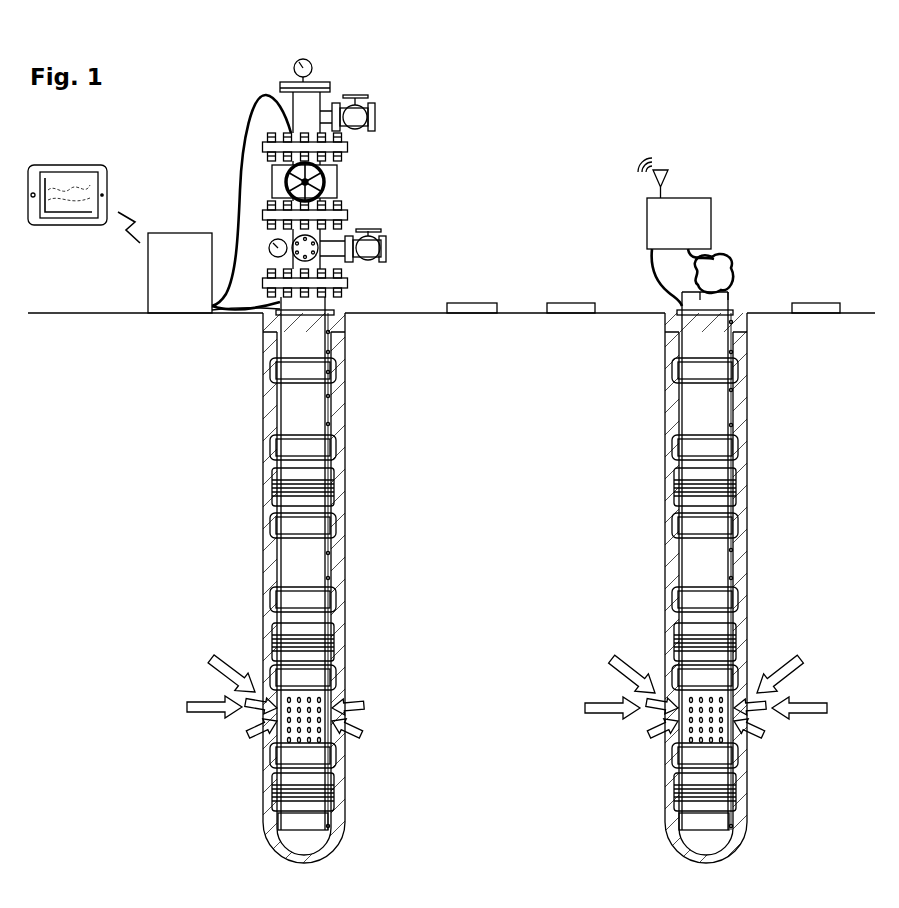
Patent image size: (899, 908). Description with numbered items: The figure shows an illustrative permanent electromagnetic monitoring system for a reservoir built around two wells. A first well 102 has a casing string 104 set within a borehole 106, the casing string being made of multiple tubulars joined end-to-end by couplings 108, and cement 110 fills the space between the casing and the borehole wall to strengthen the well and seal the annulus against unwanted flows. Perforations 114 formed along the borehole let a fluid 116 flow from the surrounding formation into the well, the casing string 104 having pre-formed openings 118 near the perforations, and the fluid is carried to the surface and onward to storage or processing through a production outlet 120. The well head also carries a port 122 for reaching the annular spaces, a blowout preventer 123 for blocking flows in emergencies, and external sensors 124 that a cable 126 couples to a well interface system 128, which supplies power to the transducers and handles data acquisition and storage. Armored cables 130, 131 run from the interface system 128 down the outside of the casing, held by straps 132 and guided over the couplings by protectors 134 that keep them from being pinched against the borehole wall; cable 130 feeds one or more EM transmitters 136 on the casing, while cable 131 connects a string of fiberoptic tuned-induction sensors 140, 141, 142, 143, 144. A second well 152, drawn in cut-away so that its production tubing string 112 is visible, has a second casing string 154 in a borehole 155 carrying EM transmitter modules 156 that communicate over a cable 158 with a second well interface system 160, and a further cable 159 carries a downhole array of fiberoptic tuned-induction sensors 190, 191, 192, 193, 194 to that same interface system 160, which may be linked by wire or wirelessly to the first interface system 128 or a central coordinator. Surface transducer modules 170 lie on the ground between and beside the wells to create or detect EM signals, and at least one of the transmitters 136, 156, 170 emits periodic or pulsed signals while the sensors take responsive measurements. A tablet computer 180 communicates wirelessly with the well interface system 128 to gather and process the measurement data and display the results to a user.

The first well 102 is at (376, 38).
The casing string 104 is at (331, 304).
The borehole 106 is at (262, 318).
The couplings 108 is at (313, 447).
The cement 110 is at (270, 410).
The production tubing string 112 is at (733, 268).
The perforations 114 is at (262, 714).
The fluid 116 is at (222, 684).
The pre-formed openings 118 is at (280, 735).
The production outlet 120 is at (359, 103).
The port 122 is at (366, 234).
The blowout preventer 123 is at (337, 192).
The external sensors 124 is at (295, 64).
The cable 126 is at (247, 124).
The well interface system 128 is at (148, 287).
The armored cable 130 is at (272, 305).
The armored cable 131 is at (233, 313).
The straps 132 is at (334, 315).
The protectors 134 is at (270, 378).
The EM transmitters 136 is at (263, 620).
The fiberoptic tuned-induction sensor 140 is at (331, 372).
The fiberoptic tuned-induction sensor 141 is at (331, 424).
The fiberoptic tuned-induction sensor 142 is at (331, 578).
The fiberoptic tuned-induction sensor 143 is at (352, 723).
The fiberoptic tuned-induction sensor 144 is at (330, 828).
The second well 152 is at (741, 138).
The second casing string 154 is at (735, 303).
The borehole 155 is at (665, 317).
The EM transmitter modules 156 is at (737, 486).
The cable 158 is at (665, 284).
The cable 159 is at (722, 253).
The second well interface system 160 is at (654, 250).
The surface transducer modules 170 is at (555, 303).
The tablet computer 180 is at (63, 228).
The fiberoptic tuned-induction sensor 190 is at (734, 390).
The fiberoptic tuned-induction sensor 191 is at (734, 425).
The fiberoptic tuned-induction sensor 192 is at (734, 578).
The fiberoptic tuned-induction sensor 193 is at (752, 726).
The fiberoptic tuned-induction sensor 194 is at (734, 830).